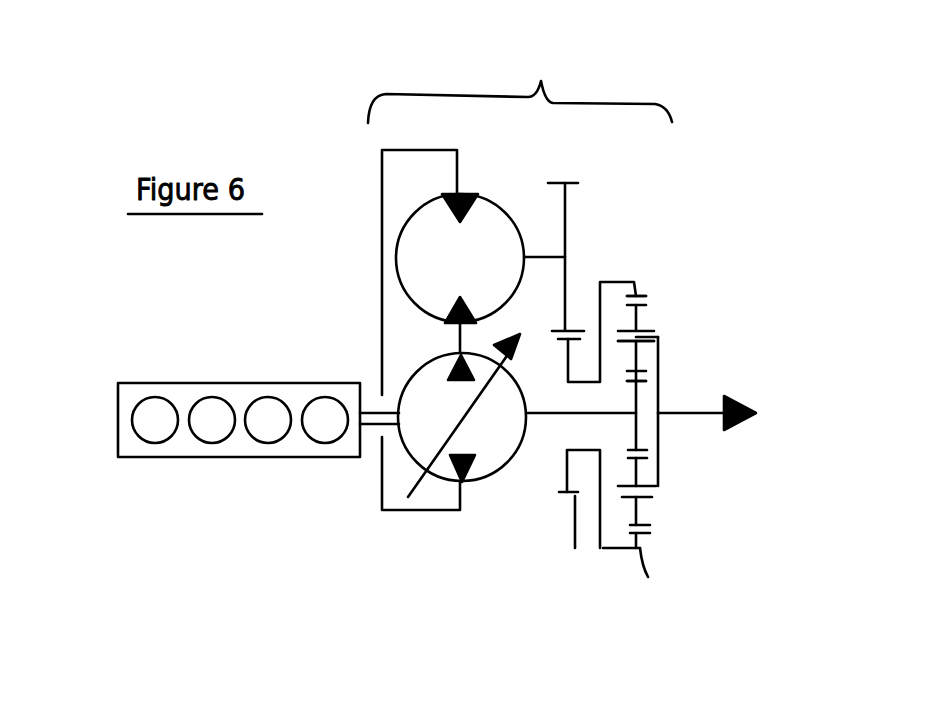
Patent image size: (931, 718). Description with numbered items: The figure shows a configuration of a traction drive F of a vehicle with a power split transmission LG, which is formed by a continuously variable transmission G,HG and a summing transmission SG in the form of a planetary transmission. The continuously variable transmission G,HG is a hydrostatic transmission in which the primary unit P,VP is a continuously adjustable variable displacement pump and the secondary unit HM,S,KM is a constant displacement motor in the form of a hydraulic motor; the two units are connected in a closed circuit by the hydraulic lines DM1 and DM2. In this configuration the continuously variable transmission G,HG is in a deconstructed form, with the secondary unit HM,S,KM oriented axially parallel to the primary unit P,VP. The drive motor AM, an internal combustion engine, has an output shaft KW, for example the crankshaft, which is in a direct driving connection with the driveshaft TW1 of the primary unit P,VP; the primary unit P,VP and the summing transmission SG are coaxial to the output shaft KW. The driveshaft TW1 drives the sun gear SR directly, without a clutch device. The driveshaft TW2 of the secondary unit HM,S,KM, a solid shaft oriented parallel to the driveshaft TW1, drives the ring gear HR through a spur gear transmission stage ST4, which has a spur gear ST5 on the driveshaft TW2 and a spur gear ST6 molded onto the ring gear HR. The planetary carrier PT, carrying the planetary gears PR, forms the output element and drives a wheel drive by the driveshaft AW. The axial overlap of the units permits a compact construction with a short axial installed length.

The drive motor AM is at (120, 401).
The output shaft KW is at (372, 408).
The hydraulic line DM1 is at (380, 171).
The hydraulic line DM2 is at (462, 336).
The power split transmission LG is at (520, 69).
The hydraulic motor / secondary unit / constant displacement motor HM,S,KM is at (408, 257).
The primary unit / variable displacement pump P,VP is at (418, 443).
The driveshaft TW1 is at (540, 420).
The driveshaft TW2 is at (542, 257).
The spur gear transmission stage ST4 is at (585, 160).
The spur gear ST5 is at (568, 332).
The spur gear ST6 is at (598, 528).
The summing transmission SG is at (675, 224).
The planetary gears PR is at (640, 318).
The planetary carrier PT is at (662, 356).
The sun gear SR is at (637, 400).
The ring gear HR is at (665, 587).
The driveshaft AW is at (700, 420).
The continuously variable transmission / hydrostatic transmission G,HG is at (417, 556).
The traction drive F is at (190, 572).